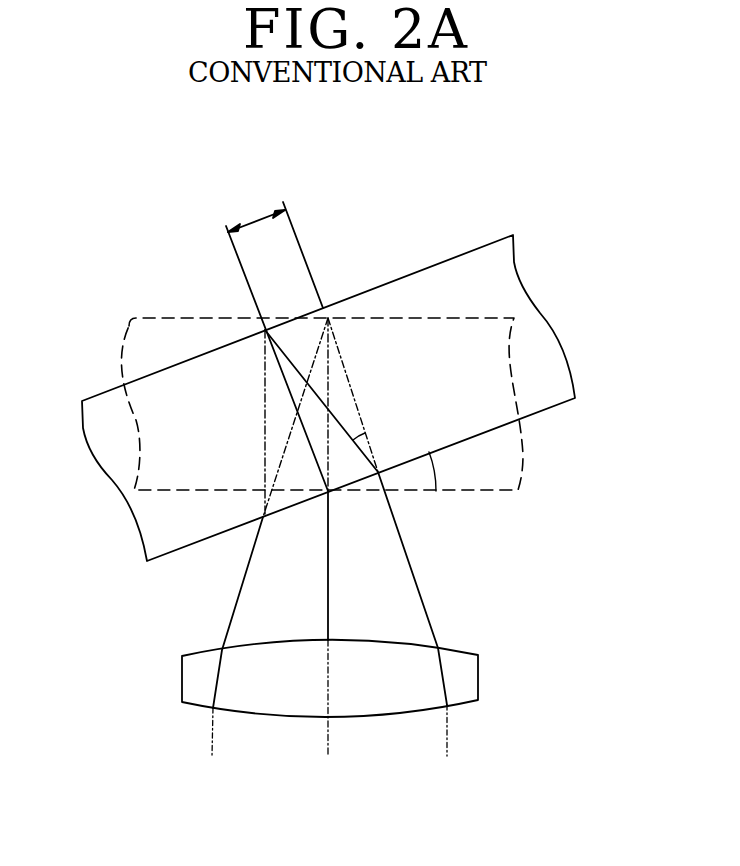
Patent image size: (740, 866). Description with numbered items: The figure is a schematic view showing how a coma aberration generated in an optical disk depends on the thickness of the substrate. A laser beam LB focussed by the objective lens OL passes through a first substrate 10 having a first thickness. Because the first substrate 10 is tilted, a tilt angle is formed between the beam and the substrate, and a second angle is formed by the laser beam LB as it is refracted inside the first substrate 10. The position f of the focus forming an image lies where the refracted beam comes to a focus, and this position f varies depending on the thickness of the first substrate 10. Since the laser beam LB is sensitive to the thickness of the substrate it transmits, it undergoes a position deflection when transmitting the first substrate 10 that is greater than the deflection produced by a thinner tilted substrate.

The first substrate 10 is at (500, 280).
The position of the focus f is at (262, 320).
The laser beam LB is at (423, 603).
The objective lens OL is at (478, 676).